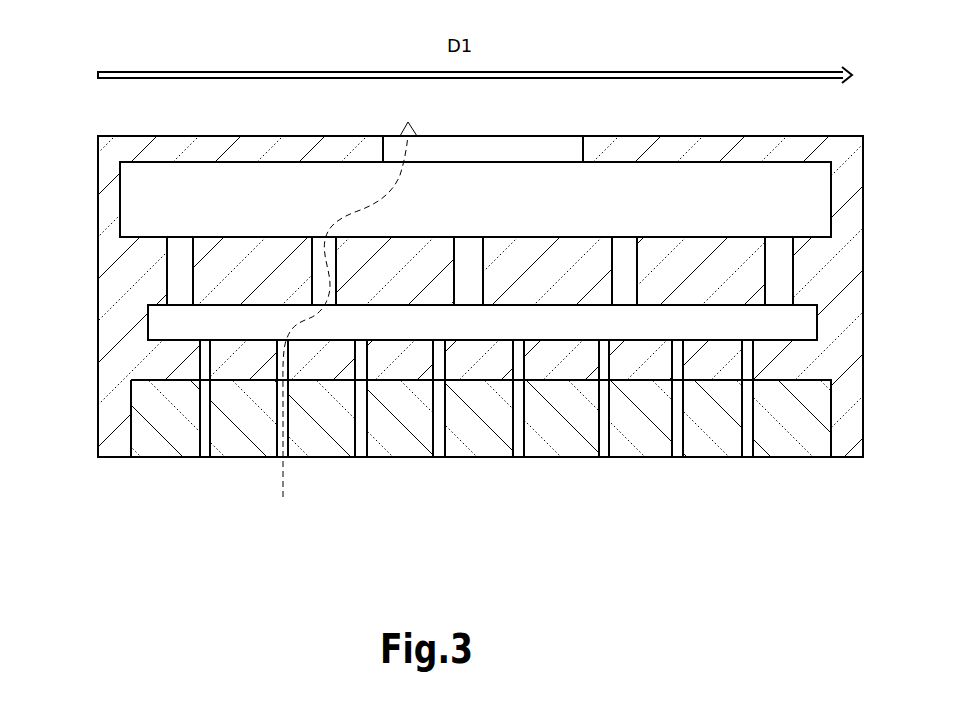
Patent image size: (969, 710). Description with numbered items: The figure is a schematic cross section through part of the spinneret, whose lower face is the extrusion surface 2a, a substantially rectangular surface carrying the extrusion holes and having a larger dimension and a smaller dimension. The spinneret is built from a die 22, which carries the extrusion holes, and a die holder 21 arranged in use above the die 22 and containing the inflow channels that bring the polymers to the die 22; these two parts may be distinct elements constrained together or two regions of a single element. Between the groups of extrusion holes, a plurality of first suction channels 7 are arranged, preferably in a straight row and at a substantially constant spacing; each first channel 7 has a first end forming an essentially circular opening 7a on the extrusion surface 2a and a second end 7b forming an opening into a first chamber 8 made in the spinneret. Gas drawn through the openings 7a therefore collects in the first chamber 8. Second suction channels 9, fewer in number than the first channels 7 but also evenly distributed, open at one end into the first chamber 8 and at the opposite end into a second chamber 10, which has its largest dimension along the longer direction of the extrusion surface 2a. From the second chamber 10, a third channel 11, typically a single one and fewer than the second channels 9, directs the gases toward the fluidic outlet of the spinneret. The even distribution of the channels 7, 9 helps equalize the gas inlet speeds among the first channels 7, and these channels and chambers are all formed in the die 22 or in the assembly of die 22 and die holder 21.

The second chamber 10 is at (162, 185).
The third channel 11 is at (534, 156).
The second suction channels 9 is at (183, 290).
The first chamber 8 is at (163, 328).
The first suction channels 7 is at (676, 411).
The openings 7a is at (679, 457).
The second end 7b is at (680, 340).
The extrusion surface 2a is at (767, 457).
The die holder 21 is at (117, 440).
The die 22 is at (163, 442).